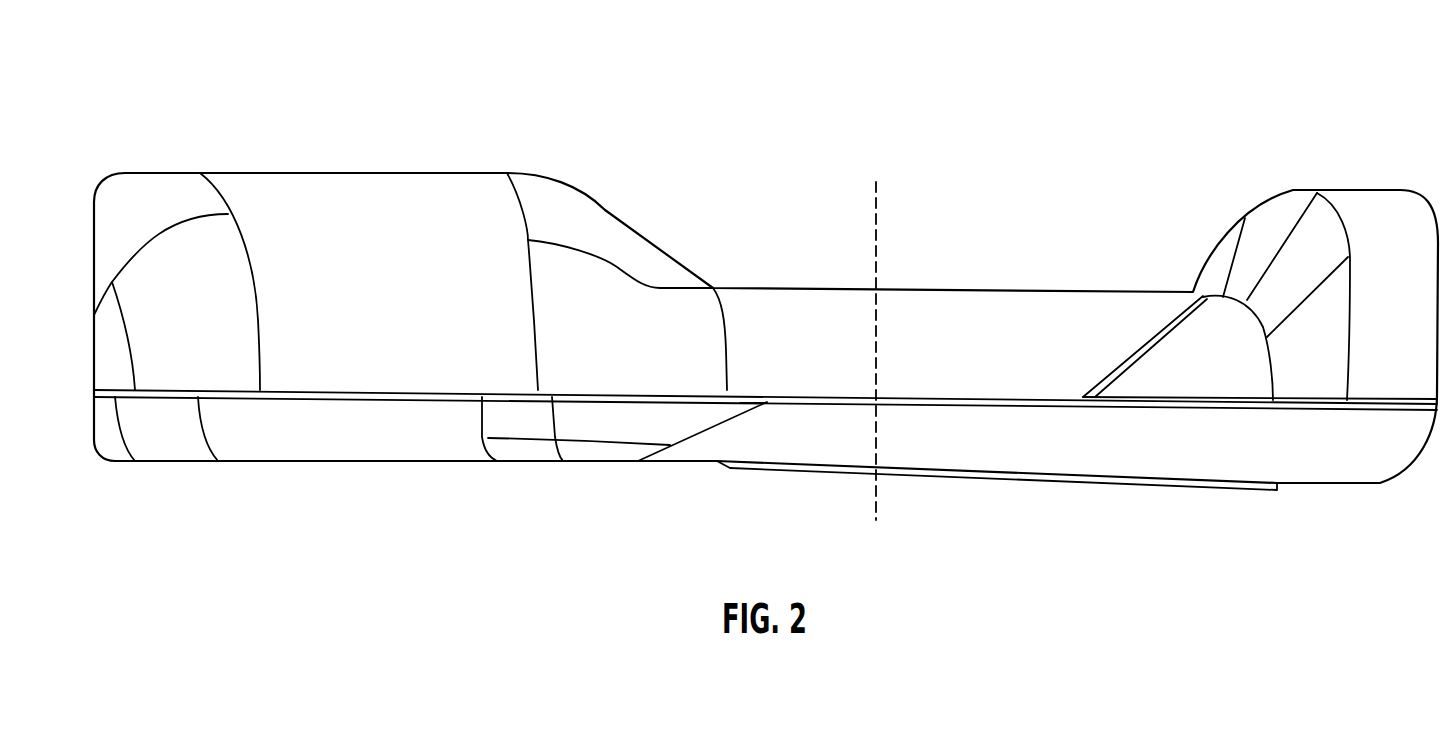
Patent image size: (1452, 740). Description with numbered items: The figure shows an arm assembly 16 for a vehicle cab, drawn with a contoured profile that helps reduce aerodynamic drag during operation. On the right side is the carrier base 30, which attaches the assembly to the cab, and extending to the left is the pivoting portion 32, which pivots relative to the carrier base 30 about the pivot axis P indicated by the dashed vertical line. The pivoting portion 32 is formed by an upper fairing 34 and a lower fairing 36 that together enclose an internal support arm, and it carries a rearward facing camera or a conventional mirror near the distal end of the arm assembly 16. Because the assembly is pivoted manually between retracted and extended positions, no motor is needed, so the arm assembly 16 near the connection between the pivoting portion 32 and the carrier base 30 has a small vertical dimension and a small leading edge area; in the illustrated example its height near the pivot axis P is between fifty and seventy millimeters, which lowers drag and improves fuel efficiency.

The arm assembly 16 is at (1158, 127).
The carrier base 30 is at (1333, 510).
The pivoting portion 32 is at (222, 98).
The upper fairing 34 is at (460, 183).
The lower fairing 36 is at (310, 427).
The pivot axis P is at (877, 218).